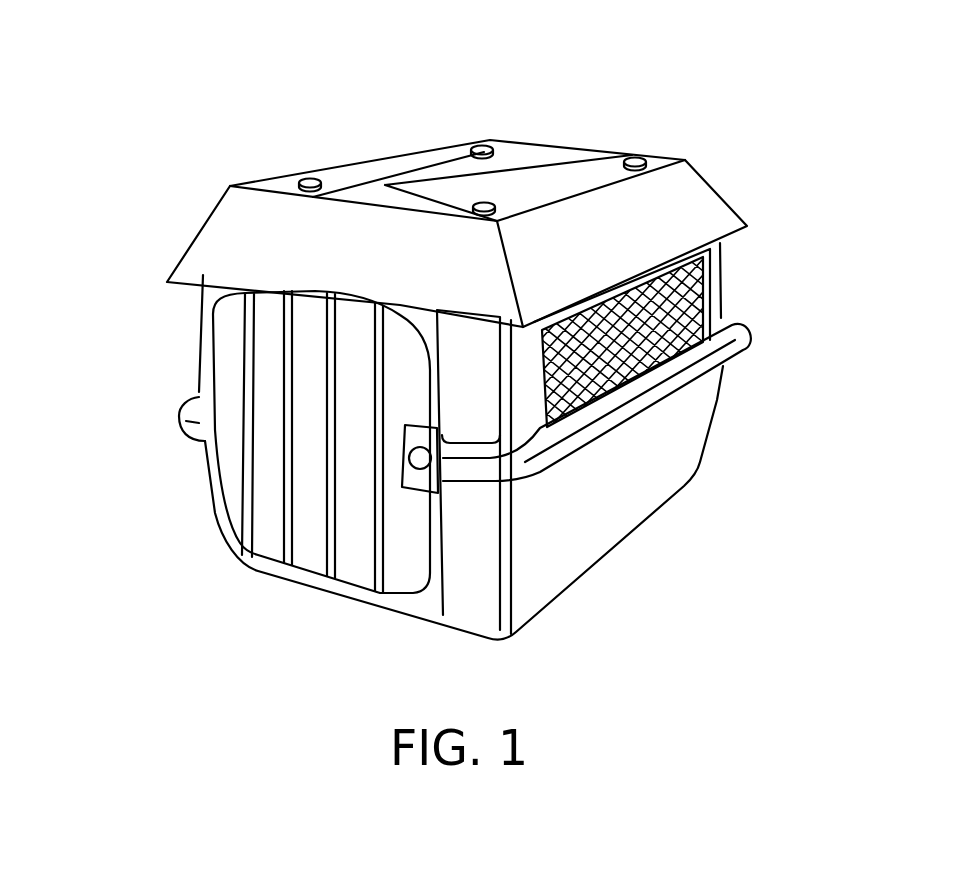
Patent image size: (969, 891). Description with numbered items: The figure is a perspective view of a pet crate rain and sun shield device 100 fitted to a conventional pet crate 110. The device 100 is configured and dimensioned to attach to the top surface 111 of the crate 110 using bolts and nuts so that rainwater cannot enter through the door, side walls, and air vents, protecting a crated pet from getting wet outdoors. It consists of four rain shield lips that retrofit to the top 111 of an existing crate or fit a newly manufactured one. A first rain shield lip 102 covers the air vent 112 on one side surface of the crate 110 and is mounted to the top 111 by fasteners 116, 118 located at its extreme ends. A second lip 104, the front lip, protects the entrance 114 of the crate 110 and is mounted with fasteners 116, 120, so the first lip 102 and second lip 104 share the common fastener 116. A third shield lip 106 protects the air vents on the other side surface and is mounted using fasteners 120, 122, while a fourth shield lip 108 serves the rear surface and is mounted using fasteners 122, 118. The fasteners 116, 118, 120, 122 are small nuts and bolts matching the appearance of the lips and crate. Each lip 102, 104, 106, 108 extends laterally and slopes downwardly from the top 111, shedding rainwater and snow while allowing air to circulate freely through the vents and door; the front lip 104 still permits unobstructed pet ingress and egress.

The rain and sun shield device 100 is at (182, 178).
The first rain shield lip 102 is at (718, 191).
The second lip 104 is at (235, 222).
The third shield lip 106 is at (382, 163).
The fourth shield lip 108 is at (596, 150).
The pet crate 110 is at (178, 364).
The top surface 111 is at (465, 177).
The air vent 112 is at (662, 316).
The entrance 114 is at (278, 430).
The fastener 116 is at (487, 203).
The fastener 118 is at (686, 161).
The fastener 120 is at (286, 181).
The fastener 122 is at (472, 148).